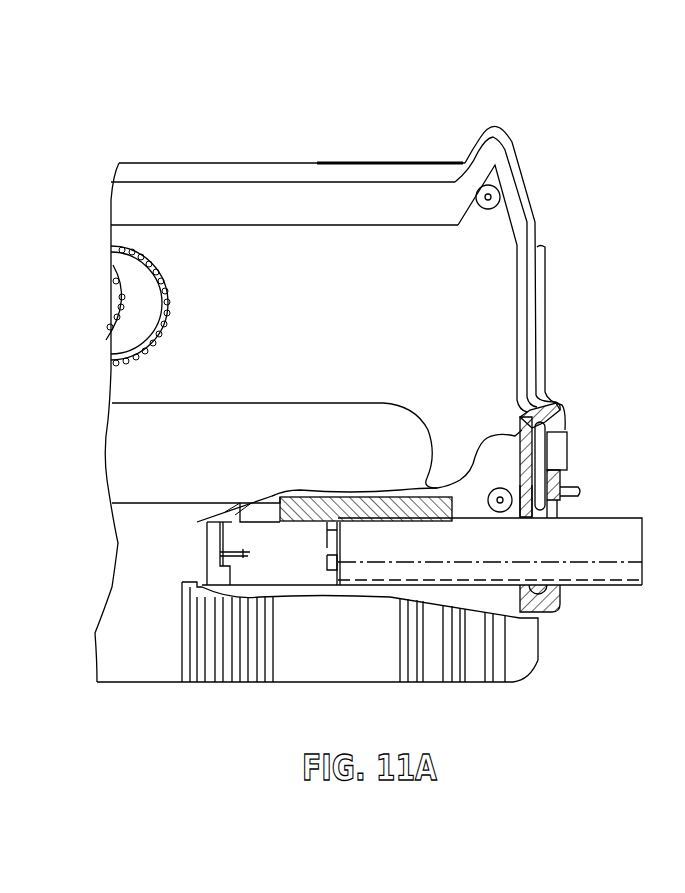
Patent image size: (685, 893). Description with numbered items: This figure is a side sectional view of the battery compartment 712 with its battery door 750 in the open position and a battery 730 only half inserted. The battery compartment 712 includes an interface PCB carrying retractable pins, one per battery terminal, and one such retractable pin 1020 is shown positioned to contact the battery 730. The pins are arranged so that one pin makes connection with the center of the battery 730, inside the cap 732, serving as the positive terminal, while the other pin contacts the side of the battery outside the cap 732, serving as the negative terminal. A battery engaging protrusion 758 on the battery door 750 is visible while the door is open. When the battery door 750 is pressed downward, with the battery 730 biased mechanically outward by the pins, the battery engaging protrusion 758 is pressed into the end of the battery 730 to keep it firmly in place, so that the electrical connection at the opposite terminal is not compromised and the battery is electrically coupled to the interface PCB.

The battery compartment 712 is at (380, 138).
The battery engaging protrusion 758 is at (513, 437).
The battery door 750 is at (546, 480).
The battery 730 is at (605, 562).
The retractable pin 1020 is at (212, 530).
The cap 732 is at (320, 545).